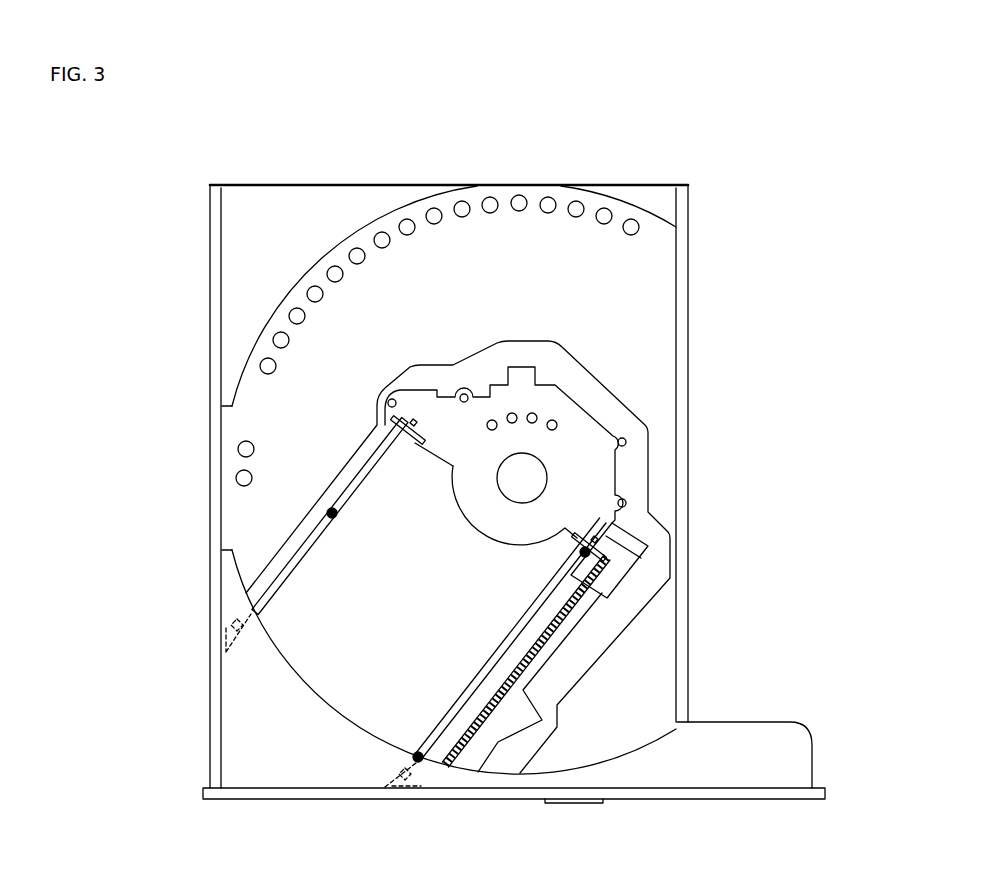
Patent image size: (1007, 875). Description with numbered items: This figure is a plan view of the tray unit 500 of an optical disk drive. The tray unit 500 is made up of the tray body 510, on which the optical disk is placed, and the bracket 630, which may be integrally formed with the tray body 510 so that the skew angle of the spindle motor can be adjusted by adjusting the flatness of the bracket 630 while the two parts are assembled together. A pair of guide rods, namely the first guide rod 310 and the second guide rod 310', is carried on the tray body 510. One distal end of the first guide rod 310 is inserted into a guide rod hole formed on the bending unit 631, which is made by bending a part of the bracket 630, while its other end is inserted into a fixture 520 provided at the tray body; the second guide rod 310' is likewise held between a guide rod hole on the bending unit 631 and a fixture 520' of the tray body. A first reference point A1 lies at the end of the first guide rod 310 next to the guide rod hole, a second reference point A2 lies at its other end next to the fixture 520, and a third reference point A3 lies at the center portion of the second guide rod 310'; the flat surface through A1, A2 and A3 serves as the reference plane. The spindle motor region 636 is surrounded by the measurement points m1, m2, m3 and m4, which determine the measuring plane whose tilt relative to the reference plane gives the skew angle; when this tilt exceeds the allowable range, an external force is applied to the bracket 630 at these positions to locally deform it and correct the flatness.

The tray unit 500 is at (712, 278).
The tray body 510 is at (557, 250).
The fixture 520 is at (423, 803).
The fixture 520' is at (199, 620).
The first guide rod 310 is at (496, 642).
The second guide rod 310' is at (330, 526).
The bracket 630 is at (490, 520).
The bending unit 631 is at (415, 447).
The spindle motor 636 is at (522, 483).
The first reference point A1 is at (590, 558).
The second reference point A2 is at (421, 762).
The third reference point A3 is at (331, 508).
The measurement point m1 is at (490, 460).
The measurement point m2 is at (552, 451).
The measurement point m3 is at (554, 508).
The measurement point m4 is at (494, 510).